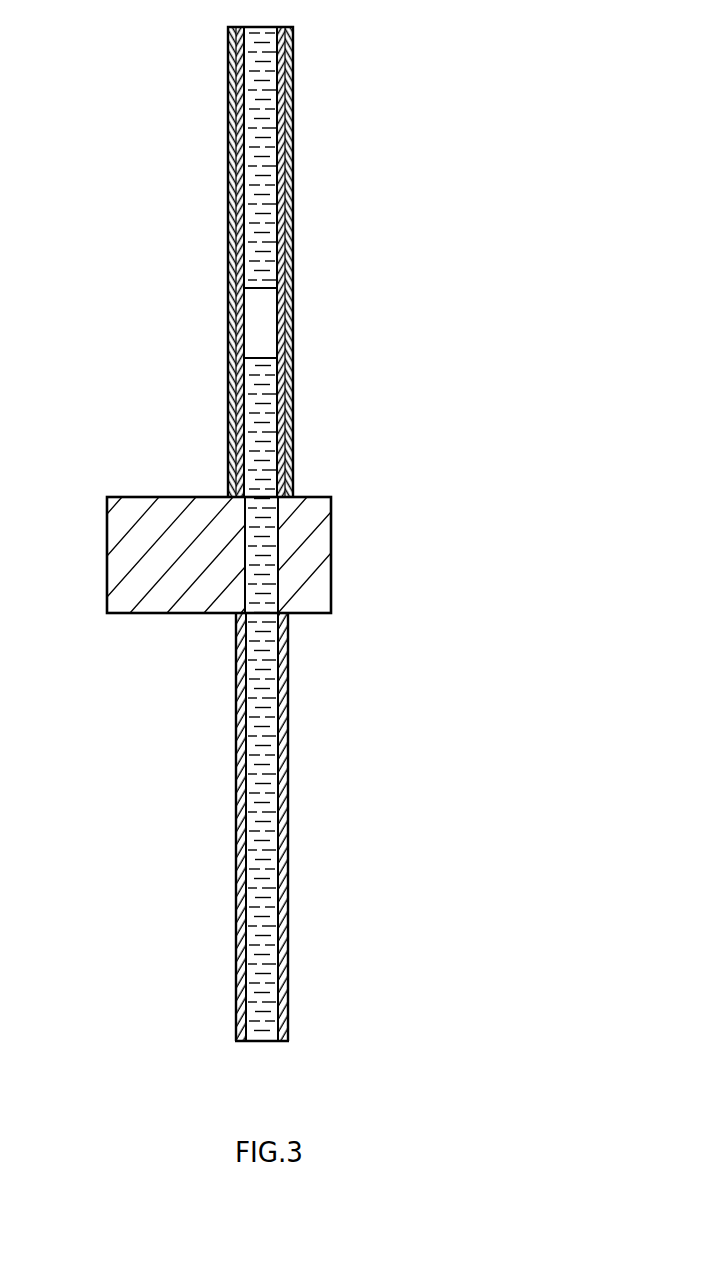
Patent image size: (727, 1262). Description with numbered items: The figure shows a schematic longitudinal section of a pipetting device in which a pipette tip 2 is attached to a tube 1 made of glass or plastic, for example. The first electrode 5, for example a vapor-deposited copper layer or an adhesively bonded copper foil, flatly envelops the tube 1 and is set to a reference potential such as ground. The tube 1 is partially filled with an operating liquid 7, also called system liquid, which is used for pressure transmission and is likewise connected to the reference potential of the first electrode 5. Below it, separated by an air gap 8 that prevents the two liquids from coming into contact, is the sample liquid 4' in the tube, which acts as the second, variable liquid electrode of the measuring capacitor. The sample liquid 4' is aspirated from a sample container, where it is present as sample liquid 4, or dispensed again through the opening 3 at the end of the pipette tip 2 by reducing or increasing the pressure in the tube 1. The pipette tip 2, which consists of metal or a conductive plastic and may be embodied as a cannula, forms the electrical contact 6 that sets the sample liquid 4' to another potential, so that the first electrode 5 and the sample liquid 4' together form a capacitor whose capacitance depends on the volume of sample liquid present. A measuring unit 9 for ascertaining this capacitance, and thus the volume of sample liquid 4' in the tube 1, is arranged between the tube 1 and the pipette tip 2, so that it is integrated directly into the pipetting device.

The tube 1 is at (279, 69).
The pipette tip 2 is at (233, 776).
The opening in the pipette tip 3 is at (270, 1045).
The sample liquid in the sample container 4 is at (310, 827).
The sample liquid in the tube 4' is at (307, 424).
The first electrode 5 is at (232, 255).
The electrical contact 6 is at (288, 692).
The operating liquid 7 is at (259, 151).
The air gap 8 is at (263, 322).
The measuring unit 9 is at (135, 545).